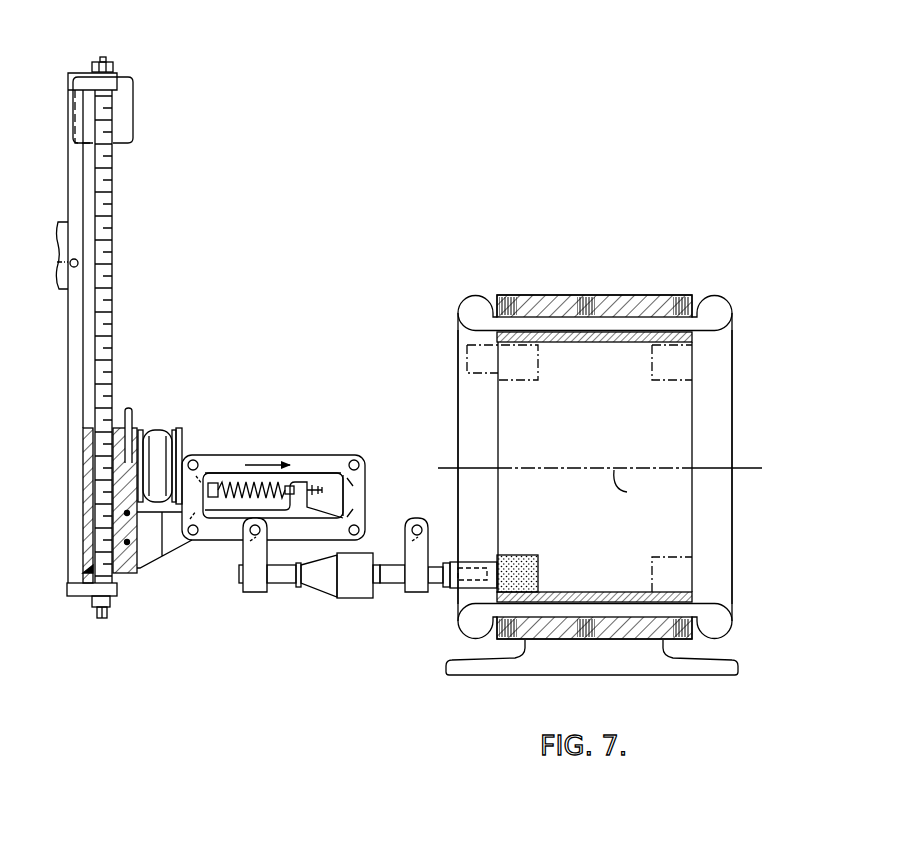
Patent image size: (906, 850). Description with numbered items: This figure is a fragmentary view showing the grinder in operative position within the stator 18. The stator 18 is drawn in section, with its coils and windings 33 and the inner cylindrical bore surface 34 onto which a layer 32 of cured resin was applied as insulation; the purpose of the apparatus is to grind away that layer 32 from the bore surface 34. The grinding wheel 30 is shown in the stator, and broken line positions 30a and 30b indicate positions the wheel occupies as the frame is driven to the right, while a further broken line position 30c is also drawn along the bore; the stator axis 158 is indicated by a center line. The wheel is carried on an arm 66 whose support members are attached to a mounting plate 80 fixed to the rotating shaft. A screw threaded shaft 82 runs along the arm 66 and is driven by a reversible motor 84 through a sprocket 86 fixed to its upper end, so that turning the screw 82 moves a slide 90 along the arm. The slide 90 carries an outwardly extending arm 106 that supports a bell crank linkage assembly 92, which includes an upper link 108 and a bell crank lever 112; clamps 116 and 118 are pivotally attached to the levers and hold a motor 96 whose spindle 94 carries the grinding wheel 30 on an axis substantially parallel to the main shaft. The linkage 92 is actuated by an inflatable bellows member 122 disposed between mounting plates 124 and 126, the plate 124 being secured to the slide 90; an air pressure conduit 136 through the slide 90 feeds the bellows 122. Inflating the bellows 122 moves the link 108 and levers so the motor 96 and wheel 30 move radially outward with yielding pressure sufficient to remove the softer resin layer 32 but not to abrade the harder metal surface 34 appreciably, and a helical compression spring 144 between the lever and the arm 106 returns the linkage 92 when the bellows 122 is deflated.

The stator 18 is at (722, 643).
The grinding wheel 30 is at (520, 555).
The broken line position of grinding wheel 30a is at (532, 381).
The broken line position of grinding wheel 30b is at (667, 381).
The brake shoe segment 30c is at (678, 557).
The layer of cured resin 32 is at (623, 342).
The coils and windings 33 is at (722, 307).
The bore surface 34 is at (605, 332).
The arm 66 is at (64, 138).
The mounting plate 80 is at (62, 222).
The screw threaded shaft 82 is at (113, 208).
The reversible motor 84 is at (135, 105).
The sprocket 86 is at (110, 62).
The slide 90 is at (120, 577).
The bell crank linkage assembly 92 is at (304, 482).
The spindle 94 is at (478, 553).
The motor 96 is at (323, 578).
The arm 106 is at (153, 553).
The upper link 108 is at (300, 458).
The bell crank lever 112 is at (357, 502).
The clamp 116 is at (252, 557).
The clamp 118 is at (422, 550).
The inflatable bellows member 122 is at (165, 430).
The mounting plate 124 is at (143, 432).
The mounting plate 126 is at (176, 432).
The air pressure conduit 136 is at (127, 408).
The helical compression spring 144 is at (240, 482).
The axis of the stator 158 is at (637, 486).